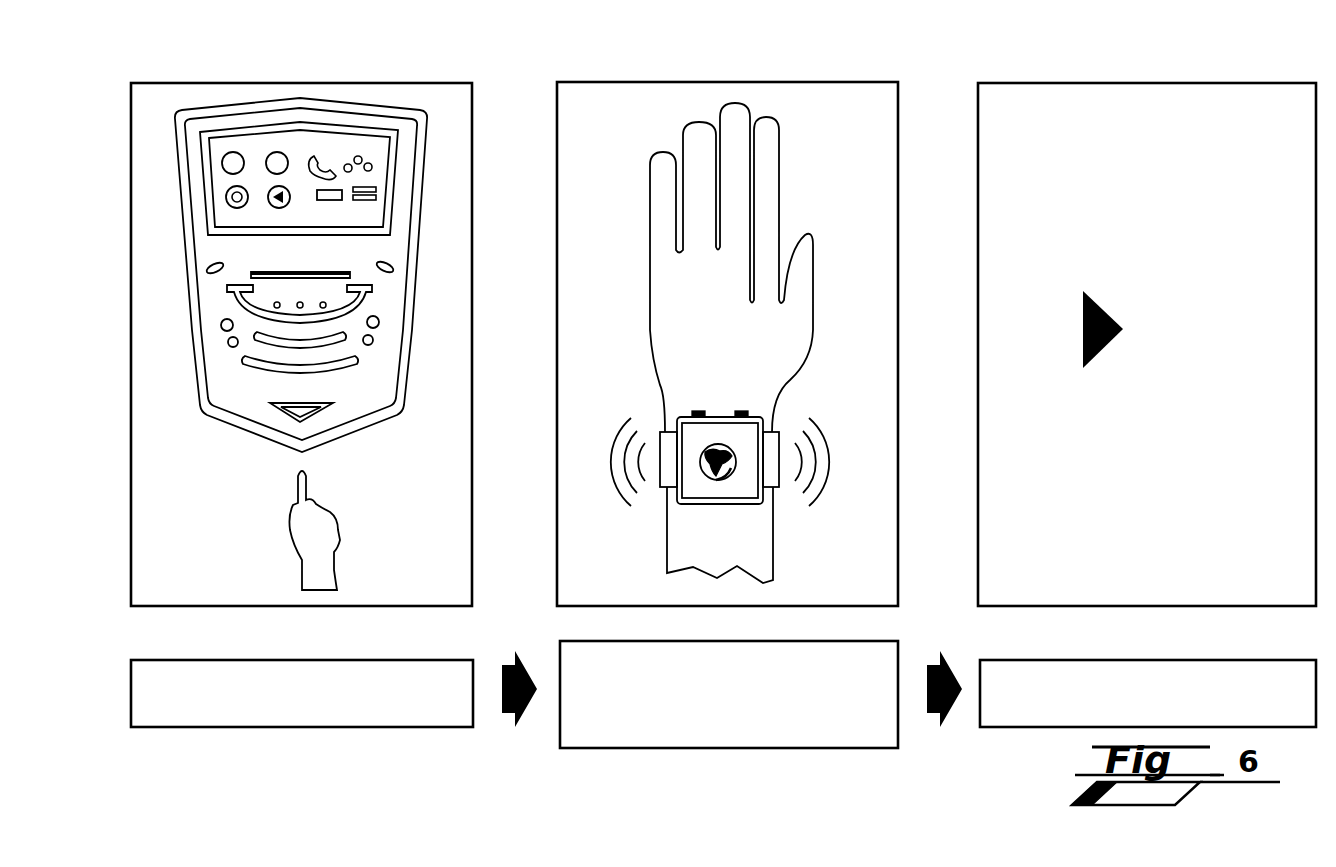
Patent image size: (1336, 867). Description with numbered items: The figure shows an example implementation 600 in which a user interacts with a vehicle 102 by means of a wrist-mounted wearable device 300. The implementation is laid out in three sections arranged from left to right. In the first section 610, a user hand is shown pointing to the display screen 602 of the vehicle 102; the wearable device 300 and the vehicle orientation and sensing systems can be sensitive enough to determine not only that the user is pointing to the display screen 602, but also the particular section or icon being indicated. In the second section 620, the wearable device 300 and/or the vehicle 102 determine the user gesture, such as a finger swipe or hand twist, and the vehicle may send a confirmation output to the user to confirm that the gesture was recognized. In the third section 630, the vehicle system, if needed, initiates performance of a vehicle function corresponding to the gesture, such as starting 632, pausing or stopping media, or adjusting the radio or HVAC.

The example implementation 600 is at (962, 42).
The vehicle 102 is at (458, 112).
The display screen 602 is at (385, 160).
The first section 610 is at (324, 706).
The second section 620 is at (711, 706).
The third section 630 is at (1136, 706).
The starting media function 632 is at (1187, 343).
The wrist-mounted wearable device 300 is at (780, 493).